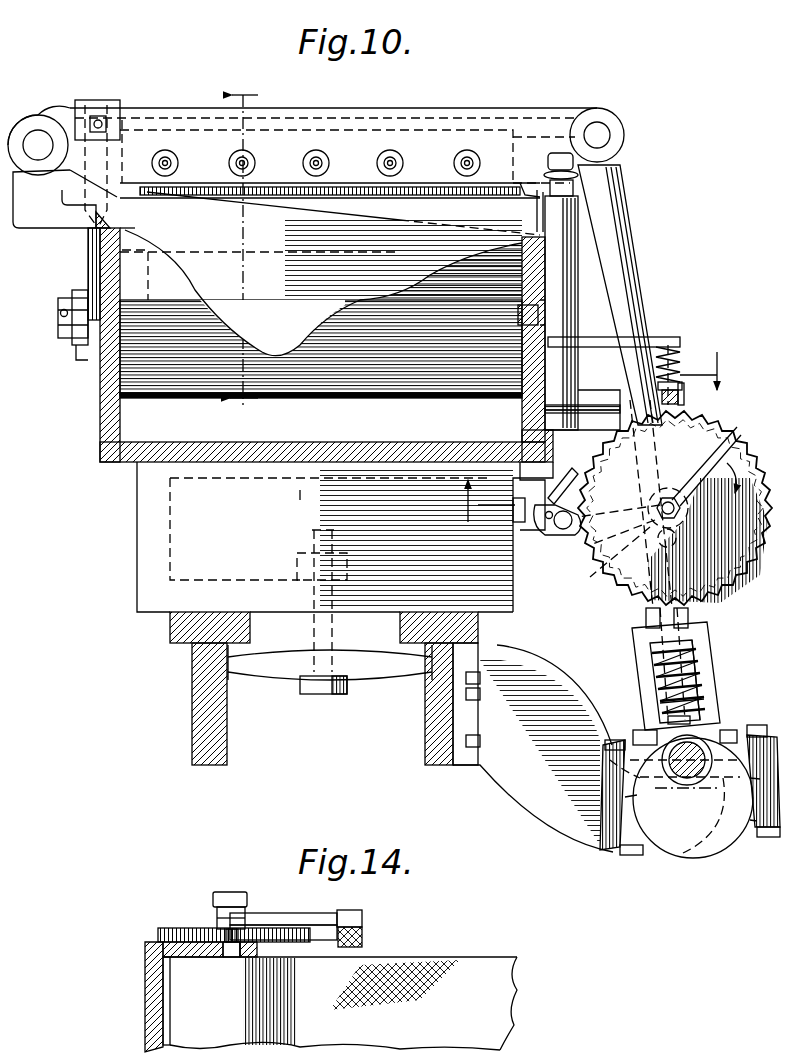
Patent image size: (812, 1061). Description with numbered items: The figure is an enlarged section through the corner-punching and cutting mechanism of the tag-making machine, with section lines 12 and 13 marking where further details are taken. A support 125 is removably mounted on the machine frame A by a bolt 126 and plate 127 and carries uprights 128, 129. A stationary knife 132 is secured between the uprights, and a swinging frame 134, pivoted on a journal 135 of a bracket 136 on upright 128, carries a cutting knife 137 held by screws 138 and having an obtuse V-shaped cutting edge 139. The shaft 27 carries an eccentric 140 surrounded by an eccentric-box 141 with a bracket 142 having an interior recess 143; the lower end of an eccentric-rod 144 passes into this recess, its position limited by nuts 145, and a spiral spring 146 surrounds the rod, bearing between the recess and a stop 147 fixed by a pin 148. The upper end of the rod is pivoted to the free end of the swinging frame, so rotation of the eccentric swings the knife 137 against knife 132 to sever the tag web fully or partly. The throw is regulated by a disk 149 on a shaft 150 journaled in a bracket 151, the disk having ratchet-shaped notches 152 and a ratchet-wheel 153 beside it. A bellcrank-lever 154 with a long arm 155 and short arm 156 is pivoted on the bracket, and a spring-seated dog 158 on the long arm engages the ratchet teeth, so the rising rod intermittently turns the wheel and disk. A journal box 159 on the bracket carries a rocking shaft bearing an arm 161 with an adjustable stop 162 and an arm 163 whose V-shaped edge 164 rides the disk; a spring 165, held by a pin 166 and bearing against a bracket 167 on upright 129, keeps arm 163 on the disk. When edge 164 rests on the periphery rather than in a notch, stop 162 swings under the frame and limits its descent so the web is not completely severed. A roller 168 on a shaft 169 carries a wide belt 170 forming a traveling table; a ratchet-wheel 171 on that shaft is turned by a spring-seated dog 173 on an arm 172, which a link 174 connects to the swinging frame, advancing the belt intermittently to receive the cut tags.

In FIG. 10, the section line 12— 12 is at (241, 246).
In FIG. 10, the section line 13— 13 is at (595, 437).
In FIG. 10, the shaft 27 is at (682, 770).
In FIG. 10, the support 125 is at (190, 522).
In FIG. 10, the bolt 126 is at (337, 696).
In FIG. 10, the plate 127 is at (373, 660).
In FIG. 10, the upright 128 is at (110, 402).
In FIG. 14, the upright 128 is at (163, 950).
In FIG. 10, the upright 129 is at (530, 433).
In FIG. 10, the stationary knife 132 is at (219, 196).
In FIG. 10, the swinging frame 134 is at (440, 112).
In FIG. 10, the journal 135 is at (40, 140).
In FIG. 10, the bracket 136 is at (36, 226).
In FIG. 10, the cutting knife 137 is at (500, 167).
In FIG. 10, the screws 138 is at (403, 166).
In FIG. 10, the V-shaped cutting edge 139 is at (390, 217).
In FIG. 10, the eccentric 140 is at (717, 823).
In FIG. 10, the eccentric-box 141 is at (630, 820).
In FIG. 10, the bracket 142 is at (710, 682).
In FIG. 10, the interior recess 143 is at (694, 648).
In FIG. 10, the eccentric-rod 144 is at (630, 288).
In FIG. 10, the nuts 145 is at (646, 622).
In FIG. 10, the spiral spring 146 is at (650, 664).
In FIG. 10, the stop 147 is at (700, 708).
In FIG. 10, the pin 148 is at (705, 720).
In FIG. 10, the disk 149 is at (712, 424).
In FIG. 10, the shaft 150 is at (680, 498).
In FIG. 10, the bracket 151 is at (702, 462).
In FIG. 10, the ratchet-shaped notches 152 is at (728, 455).
In FIG. 10, the ratchet-wheel 153 is at (673, 542).
In FIG. 10, the bellcrank-lever 154 is at (590, 565).
In FIG. 10, the long arm 155 is at (603, 585).
In FIG. 10, the short arm 156 is at (550, 480).
In FIG. 10, the spring-seated dog 158 is at (578, 500).
In FIG. 10, the journal box 159 is at (565, 388).
In FIG. 10, the arm 161 is at (540, 316).
In FIG. 10, the stop 162 is at (578, 175).
In FIG. 10, the arm 163 is at (677, 392).
In FIG. 10, the V-shaped edge 164 is at (686, 397).
In FIG. 10, the spring 165 is at (652, 346).
In FIG. 10, the pin 166 is at (668, 382).
In FIG. 10, the bracket 167 is at (633, 318).
In FIG. 10, the roller 168 is at (138, 330).
In FIG. 14, the roller 168 is at (190, 1002).
In FIG. 10, the shaft 169 is at (87, 362).
In FIG. 14, the shaft 169 is at (231, 950).
In FIG. 10, the belt 170 is at (387, 345).
In FIG. 14, the belt 170 is at (480, 951).
In FIG. 10, the ratchet-wheel 171 is at (93, 380).
In FIG. 14, the ratchet-wheel 171 is at (182, 930).
In FIG. 10, the arm 172 is at (76, 341).
In FIG. 14, the arm 172 is at (318, 927).
In FIG. 14, the spring-seated dog 173 is at (362, 917).
In FIG. 10, the link 174 is at (96, 240).
In FIG. 14, the link 174 is at (364, 936).
In FIG. 10, the frame A is at (213, 713).